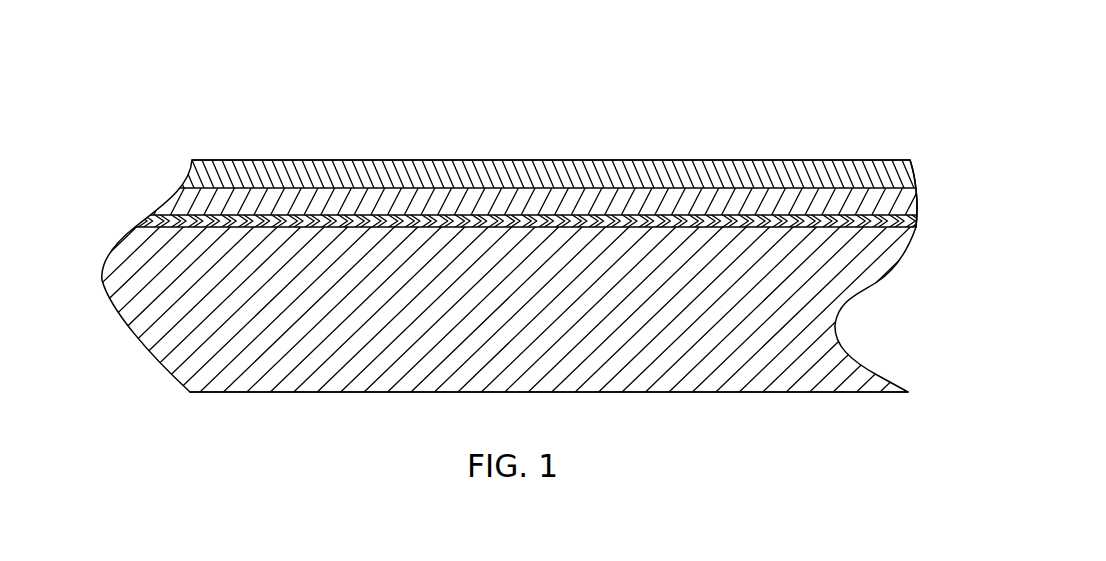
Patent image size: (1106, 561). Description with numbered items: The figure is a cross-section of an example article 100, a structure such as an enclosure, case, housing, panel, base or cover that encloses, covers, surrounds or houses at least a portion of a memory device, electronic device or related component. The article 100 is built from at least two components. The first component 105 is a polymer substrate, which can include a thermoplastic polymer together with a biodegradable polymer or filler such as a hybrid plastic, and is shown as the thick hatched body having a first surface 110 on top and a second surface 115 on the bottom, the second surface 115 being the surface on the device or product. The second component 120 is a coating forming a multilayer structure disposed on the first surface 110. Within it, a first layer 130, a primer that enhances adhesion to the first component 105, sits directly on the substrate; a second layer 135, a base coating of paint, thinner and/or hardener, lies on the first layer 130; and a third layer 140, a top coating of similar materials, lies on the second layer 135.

The article 100 is at (237, 105).
The first component 105 is at (523, 316).
The first surface 110 is at (820, 227).
The second surface 115 is at (793, 392).
The second component 120 is at (1017, 150).
The first layer 130 is at (917, 222).
The second layer 135 is at (919, 198).
The third layer 140 is at (916, 171).